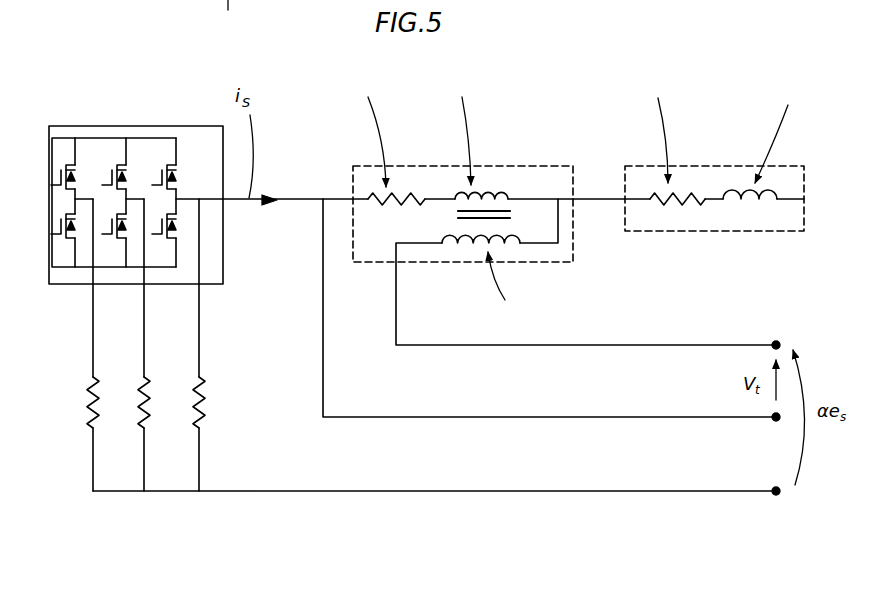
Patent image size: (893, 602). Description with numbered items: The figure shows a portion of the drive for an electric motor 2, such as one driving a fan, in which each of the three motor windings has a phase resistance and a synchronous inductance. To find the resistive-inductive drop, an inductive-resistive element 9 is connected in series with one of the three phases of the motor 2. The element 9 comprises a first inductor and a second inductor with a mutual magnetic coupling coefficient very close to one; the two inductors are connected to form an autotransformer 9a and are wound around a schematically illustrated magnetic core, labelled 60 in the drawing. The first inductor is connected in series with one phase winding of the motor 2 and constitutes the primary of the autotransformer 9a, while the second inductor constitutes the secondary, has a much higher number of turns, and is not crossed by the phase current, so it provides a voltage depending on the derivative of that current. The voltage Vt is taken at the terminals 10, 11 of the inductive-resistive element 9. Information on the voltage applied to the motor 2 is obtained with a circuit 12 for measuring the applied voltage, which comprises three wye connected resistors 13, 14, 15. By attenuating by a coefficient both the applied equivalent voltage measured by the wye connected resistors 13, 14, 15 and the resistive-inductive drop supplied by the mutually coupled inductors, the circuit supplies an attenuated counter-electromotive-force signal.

The electric motor 2 is at (720, 165).
The inductive-resistive element 9 is at (542, 165).
The autotransformer 9a is at (462, 246).
The terminal 10 is at (776, 340).
The terminal 11 is at (776, 421).
The circuit for measuring the applied voltage 12 is at (226, 408).
The resistor 13 is at (186, 410).
The resistor 14 is at (132, 409).
The resistor 15 is at (80, 407).
The magnetic core 60 is at (452, 214).